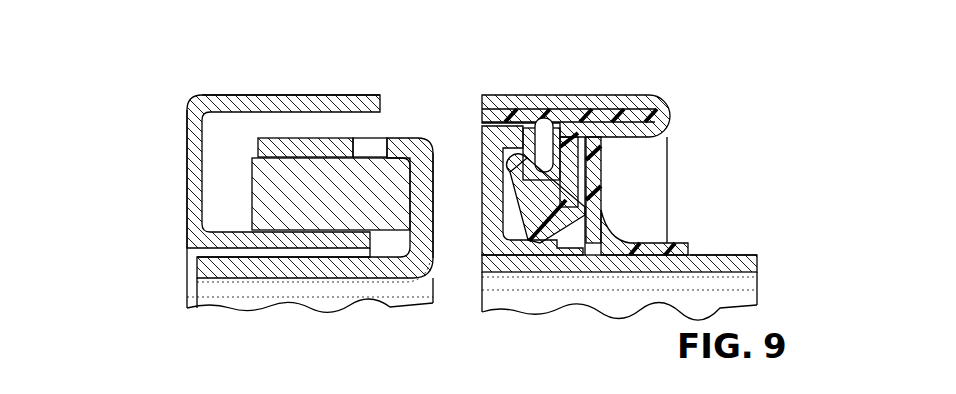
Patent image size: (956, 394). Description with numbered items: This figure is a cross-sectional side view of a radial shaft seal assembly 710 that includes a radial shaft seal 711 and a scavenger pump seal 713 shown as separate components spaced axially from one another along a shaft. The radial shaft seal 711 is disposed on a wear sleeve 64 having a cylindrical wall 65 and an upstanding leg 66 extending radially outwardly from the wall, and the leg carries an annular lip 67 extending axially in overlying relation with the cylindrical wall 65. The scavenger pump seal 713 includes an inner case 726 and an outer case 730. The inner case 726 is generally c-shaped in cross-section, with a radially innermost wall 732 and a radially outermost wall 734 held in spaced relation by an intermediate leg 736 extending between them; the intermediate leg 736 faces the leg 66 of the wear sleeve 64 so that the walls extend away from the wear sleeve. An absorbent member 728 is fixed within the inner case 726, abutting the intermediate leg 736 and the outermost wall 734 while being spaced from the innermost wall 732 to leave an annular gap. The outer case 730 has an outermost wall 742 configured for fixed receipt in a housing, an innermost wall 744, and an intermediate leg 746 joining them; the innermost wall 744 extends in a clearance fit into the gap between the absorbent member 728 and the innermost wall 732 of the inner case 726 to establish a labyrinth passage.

The scavenger pump seal 713 is at (285, 189).
The outer case 730 is at (246, 128).
The outermost wall 742 is at (273, 94).
The intermediate leg 746 is at (186, 195).
The outermost wall 734 is at (318, 137).
The absorbent member 728 is at (371, 187).
The innermost wall 744 is at (243, 250).
The innermost wall 732 is at (333, 247).
The intermediate leg 736 is at (433, 222).
The inner case 726 is at (298, 316).
The radial shaft seal assembly 710 is at (620, 174).
The radial shaft seal 711 is at (618, 159).
The upstanding leg 66 is at (486, 155).
The annular lip 67 is at (538, 118).
The cylindrical wall 65 is at (700, 252).
The wear sleeve 64 is at (638, 254).